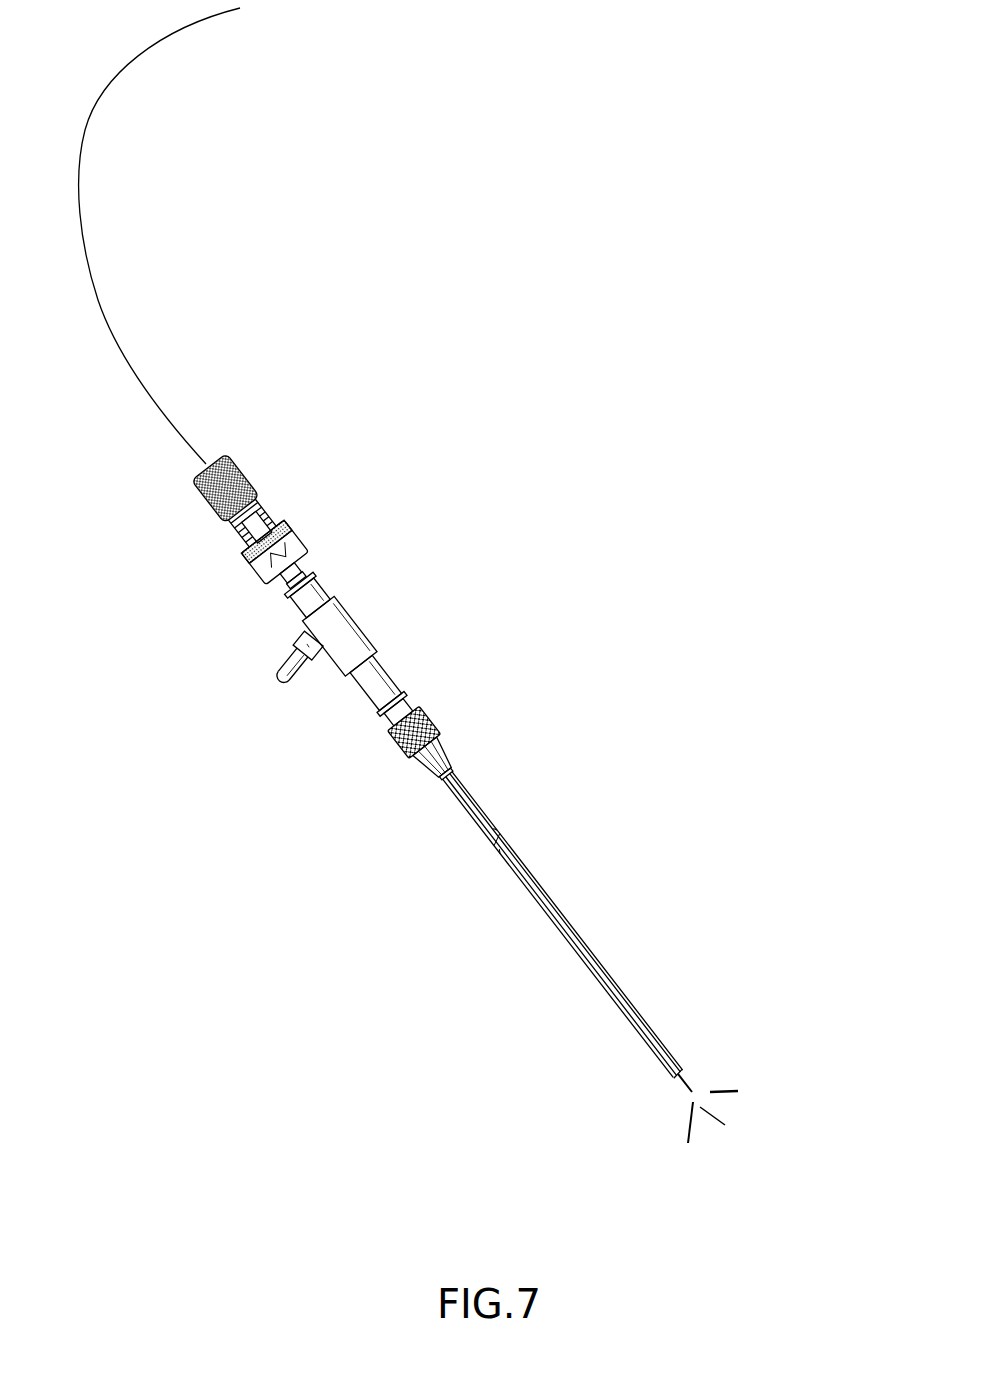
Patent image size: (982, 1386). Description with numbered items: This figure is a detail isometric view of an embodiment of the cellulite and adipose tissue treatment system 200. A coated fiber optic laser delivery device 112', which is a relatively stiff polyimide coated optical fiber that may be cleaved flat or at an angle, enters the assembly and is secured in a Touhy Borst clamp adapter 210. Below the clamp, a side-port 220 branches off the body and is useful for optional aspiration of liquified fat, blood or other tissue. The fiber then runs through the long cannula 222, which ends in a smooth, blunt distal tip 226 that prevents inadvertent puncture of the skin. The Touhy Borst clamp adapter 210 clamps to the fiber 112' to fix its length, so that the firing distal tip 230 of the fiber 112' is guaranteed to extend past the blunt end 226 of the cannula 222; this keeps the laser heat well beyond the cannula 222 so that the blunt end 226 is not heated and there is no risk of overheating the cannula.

The cellulite and adipose tissue treatment system 200 is at (275, 894).
The coated fiber optic laser delivery device 112' is at (174, 236).
The Touhy Borst clamp adapter 210 is at (248, 478).
The side-port 220 is at (310, 645).
The cannula 222 is at (507, 837).
The distal tip of the cannula 226 is at (680, 1075).
The distal tip of the fiber 230 is at (697, 1074).